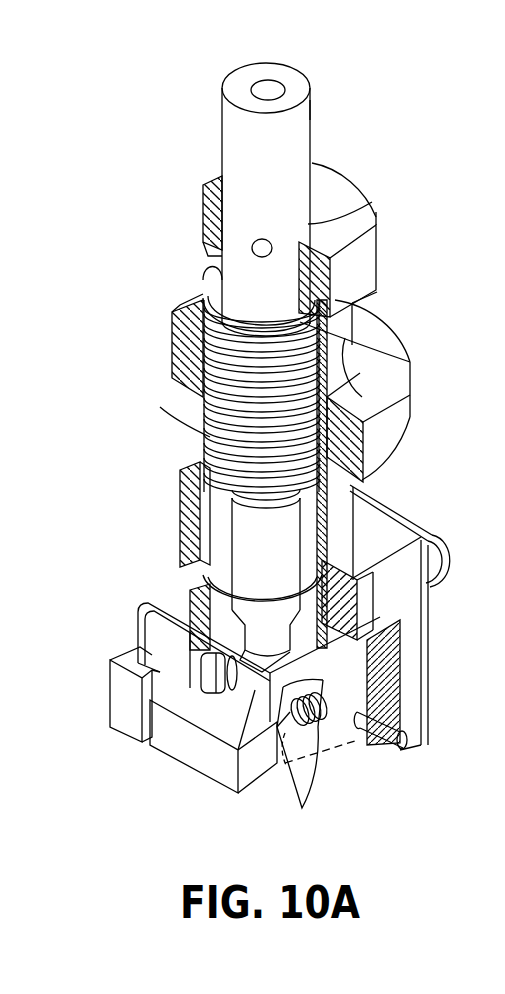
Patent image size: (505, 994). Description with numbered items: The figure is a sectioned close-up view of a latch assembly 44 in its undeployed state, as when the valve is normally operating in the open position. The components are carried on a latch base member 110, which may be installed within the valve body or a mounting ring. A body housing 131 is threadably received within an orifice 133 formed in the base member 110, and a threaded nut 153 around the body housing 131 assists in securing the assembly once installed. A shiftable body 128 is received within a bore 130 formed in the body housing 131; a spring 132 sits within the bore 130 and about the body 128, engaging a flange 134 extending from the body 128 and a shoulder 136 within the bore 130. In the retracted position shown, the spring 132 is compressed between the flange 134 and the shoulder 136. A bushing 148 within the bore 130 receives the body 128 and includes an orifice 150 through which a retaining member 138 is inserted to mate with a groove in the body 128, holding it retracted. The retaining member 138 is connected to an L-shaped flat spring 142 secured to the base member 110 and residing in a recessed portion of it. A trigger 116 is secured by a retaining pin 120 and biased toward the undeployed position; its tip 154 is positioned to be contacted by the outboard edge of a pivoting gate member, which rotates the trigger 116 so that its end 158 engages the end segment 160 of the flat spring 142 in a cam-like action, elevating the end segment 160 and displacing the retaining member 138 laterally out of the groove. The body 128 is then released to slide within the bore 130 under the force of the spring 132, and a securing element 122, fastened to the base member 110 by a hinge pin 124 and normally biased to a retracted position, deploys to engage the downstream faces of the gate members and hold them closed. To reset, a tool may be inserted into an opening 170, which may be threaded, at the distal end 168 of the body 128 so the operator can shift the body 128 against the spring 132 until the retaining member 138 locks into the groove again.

The latch assembly 44 is at (406, 140).
The latch base member 110 is at (411, 560).
The trigger 116 is at (303, 782).
The retaining pin 120 is at (330, 720).
The securing element 122 is at (191, 753).
The hinge pin 124 is at (404, 746).
The shiftable body 128 is at (231, 162).
The bore 130 is at (362, 199).
The body housing 131 is at (346, 500).
The spring 132 is at (199, 406).
The orifice 133 is at (330, 600).
The flange 134 is at (232, 494).
The shoulder 136 is at (334, 347).
The retaining member 138 is at (205, 675).
The L-shaped flat spring 142 is at (153, 631).
The bushing 148 is at (220, 606).
The orifice 150 is at (258, 642).
The threaded nut 153 is at (402, 403).
The tip 154 is at (303, 808).
The end 158 is at (307, 692).
The end segment 160 is at (265, 690).
The distal end 168 is at (305, 109).
The opening 170 is at (260, 90).